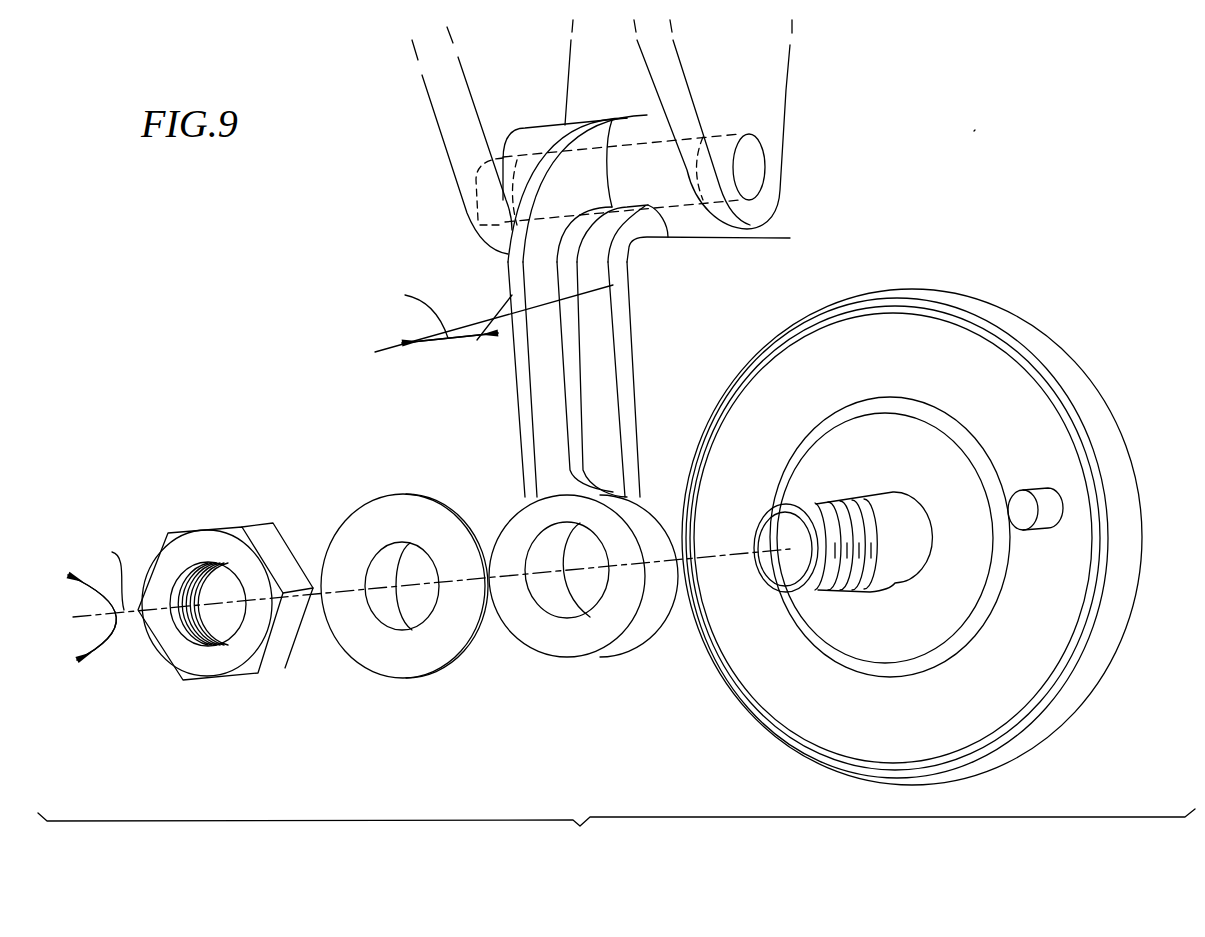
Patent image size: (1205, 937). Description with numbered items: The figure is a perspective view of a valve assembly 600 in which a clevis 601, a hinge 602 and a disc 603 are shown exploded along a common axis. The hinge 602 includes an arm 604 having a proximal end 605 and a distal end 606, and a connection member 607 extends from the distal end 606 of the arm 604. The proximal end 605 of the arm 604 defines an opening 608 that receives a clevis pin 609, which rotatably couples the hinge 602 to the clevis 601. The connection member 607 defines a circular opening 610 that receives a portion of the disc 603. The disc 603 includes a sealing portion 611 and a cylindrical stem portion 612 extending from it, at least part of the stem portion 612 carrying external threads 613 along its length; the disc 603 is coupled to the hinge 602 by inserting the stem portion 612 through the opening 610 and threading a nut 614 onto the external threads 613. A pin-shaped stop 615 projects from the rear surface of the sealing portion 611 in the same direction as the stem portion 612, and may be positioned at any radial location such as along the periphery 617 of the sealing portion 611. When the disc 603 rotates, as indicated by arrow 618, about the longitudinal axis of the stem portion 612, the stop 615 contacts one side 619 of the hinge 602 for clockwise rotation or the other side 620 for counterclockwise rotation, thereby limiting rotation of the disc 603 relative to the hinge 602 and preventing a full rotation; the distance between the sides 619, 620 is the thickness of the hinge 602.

The valve assembly 600 is at (975, 130).
The clevis 601 is at (780, 66).
The hinge 602 is at (640, 367).
The disc 603 is at (1062, 325).
The arm 604 is at (550, 408).
The proximal end 605 is at (585, 133).
The distal end 606 is at (550, 470).
The connection member 607 is at (582, 641).
The opening 608 is at (740, 230).
The clevis pin 609 is at (750, 165).
The opening 610 is at (580, 590).
The sealing portion 611 is at (1043, 446).
The stem portion 612 is at (888, 567).
The external threads 613 is at (830, 570).
The nut 614 is at (273, 658).
The stop 615 is at (1045, 523).
The periphery 617 is at (1060, 683).
The arrow 618 is at (115, 647).
The side 619 is at (508, 272).
The side 620 is at (613, 270).